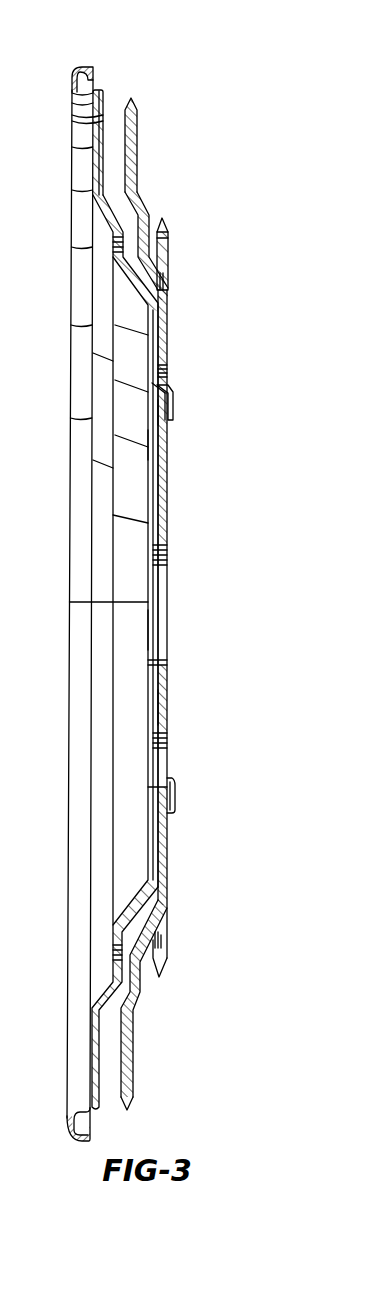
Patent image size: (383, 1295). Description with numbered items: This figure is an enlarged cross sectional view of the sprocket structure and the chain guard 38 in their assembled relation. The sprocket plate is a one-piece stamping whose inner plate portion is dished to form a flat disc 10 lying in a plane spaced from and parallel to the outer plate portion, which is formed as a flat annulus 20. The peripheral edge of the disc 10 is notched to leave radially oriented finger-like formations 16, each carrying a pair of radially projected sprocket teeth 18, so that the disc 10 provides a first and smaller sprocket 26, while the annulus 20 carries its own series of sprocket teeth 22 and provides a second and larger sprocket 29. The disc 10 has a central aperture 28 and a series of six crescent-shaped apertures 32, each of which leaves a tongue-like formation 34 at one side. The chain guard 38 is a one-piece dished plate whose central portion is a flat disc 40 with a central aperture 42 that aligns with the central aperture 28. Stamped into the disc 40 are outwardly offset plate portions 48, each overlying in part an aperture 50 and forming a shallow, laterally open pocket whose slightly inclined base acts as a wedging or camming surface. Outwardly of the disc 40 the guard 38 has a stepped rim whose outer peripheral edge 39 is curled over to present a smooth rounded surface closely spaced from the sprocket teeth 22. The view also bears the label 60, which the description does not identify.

The disc 10 is at (163, 707).
The finger-like formations 16 is at (164, 262).
The sprocket teeth 18 is at (164, 230).
The annulus 20 is at (137, 1037).
The sprocket teeth 22 is at (135, 110).
The first sprocket 26 is at (176, 940).
The central aperture 28 is at (163, 614).
The second sprocket 29 is at (138, 1106).
The crescent-shaped apertures 32 is at (163, 373).
The tongue-like formation 34 is at (162, 410).
The chain guard 38 is at (90, 565).
The outer peripheral edge 39 is at (77, 66).
The disc 40 is at (148, 702).
The central aperture 42 is at (148, 630).
The offset plate portions 48 is at (177, 408).
The aperture 50 is at (153, 443).
The rib 60 is at (102, 117).